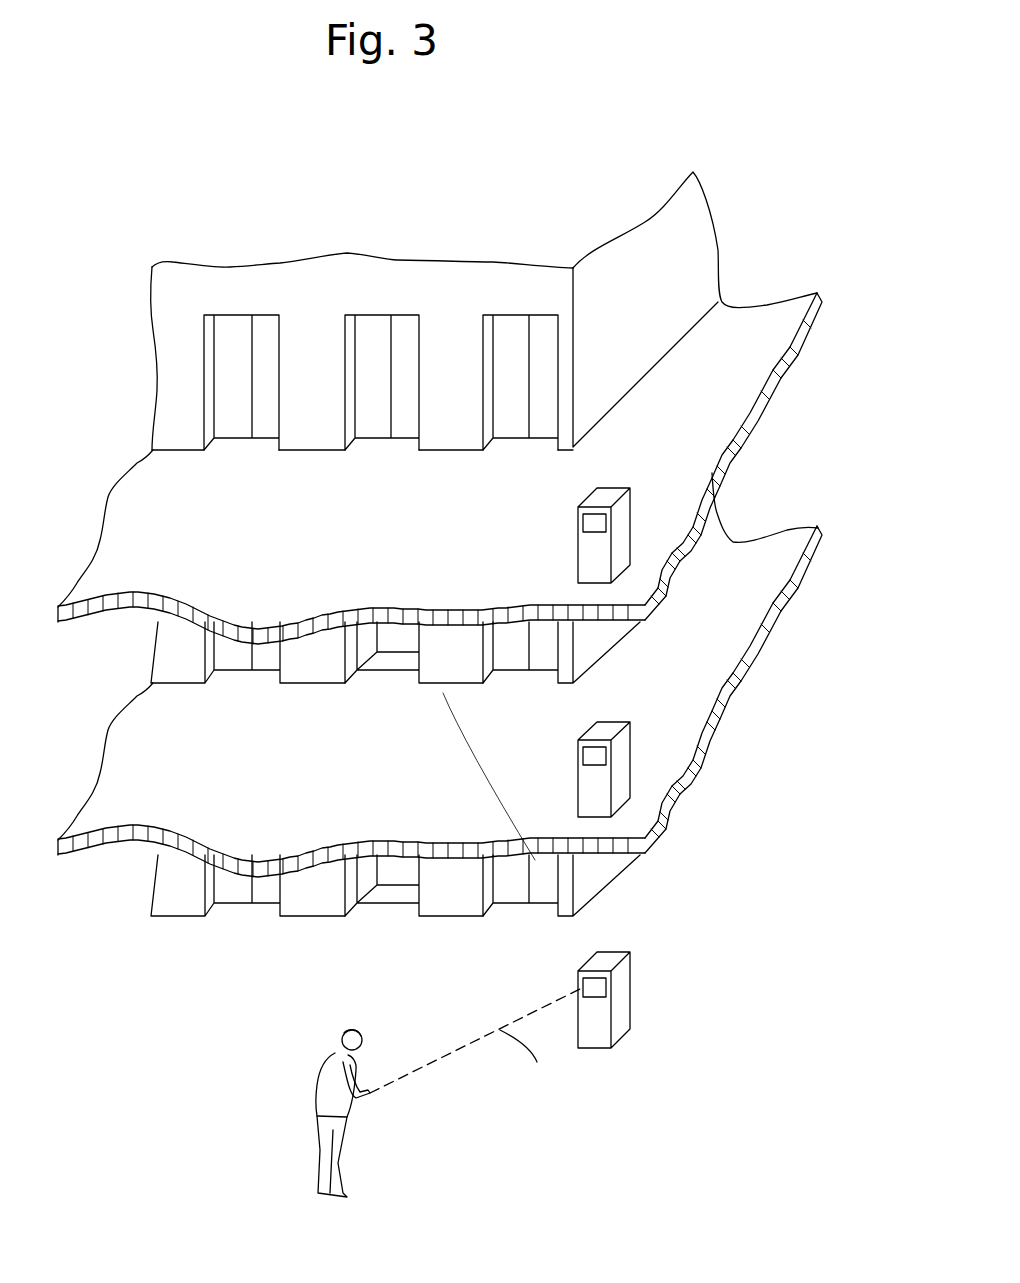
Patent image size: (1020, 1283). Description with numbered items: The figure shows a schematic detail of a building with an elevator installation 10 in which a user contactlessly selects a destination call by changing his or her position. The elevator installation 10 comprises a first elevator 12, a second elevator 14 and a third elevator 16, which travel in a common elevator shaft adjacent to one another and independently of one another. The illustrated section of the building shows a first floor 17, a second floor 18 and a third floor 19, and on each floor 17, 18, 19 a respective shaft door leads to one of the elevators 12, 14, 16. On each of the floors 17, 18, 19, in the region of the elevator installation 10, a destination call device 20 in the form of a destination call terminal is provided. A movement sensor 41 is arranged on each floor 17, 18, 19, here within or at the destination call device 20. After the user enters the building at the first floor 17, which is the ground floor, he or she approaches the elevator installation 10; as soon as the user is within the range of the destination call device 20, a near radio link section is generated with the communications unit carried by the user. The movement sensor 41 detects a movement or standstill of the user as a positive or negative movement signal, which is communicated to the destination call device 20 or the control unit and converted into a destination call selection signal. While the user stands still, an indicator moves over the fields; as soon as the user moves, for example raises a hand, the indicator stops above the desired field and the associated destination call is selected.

The elevator installation 10 is at (445, 168).
The first elevator 12 is at (235, 258).
The second elevator 14 is at (376, 252).
The third elevator 16 is at (531, 252).
The first floor 17 is at (160, 1068).
The second floor 18 is at (160, 788).
The third floor 19 is at (160, 555).
The destination call device 20 is at (637, 518).
The movement sensor 41 is at (583, 524).